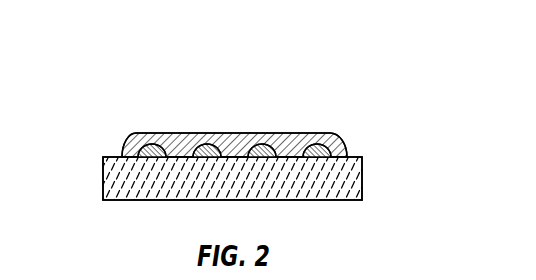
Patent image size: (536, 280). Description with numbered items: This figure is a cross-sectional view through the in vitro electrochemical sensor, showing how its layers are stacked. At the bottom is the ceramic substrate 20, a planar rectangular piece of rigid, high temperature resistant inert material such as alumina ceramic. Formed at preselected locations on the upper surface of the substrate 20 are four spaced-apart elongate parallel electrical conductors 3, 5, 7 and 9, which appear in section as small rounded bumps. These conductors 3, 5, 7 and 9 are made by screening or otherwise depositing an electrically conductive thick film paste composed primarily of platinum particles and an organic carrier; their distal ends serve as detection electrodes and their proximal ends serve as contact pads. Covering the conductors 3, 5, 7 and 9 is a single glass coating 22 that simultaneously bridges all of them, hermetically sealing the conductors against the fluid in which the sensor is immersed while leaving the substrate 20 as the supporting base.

The ceramic substrate 20 is at (347, 158).
The glass coating 22 is at (136, 135).
The electrical conductor 9 is at (152, 133).
The electrical conductor 7 is at (207, 133).
The electrical conductor 5 is at (262, 133).
The electrical conductor 3 is at (317, 133).